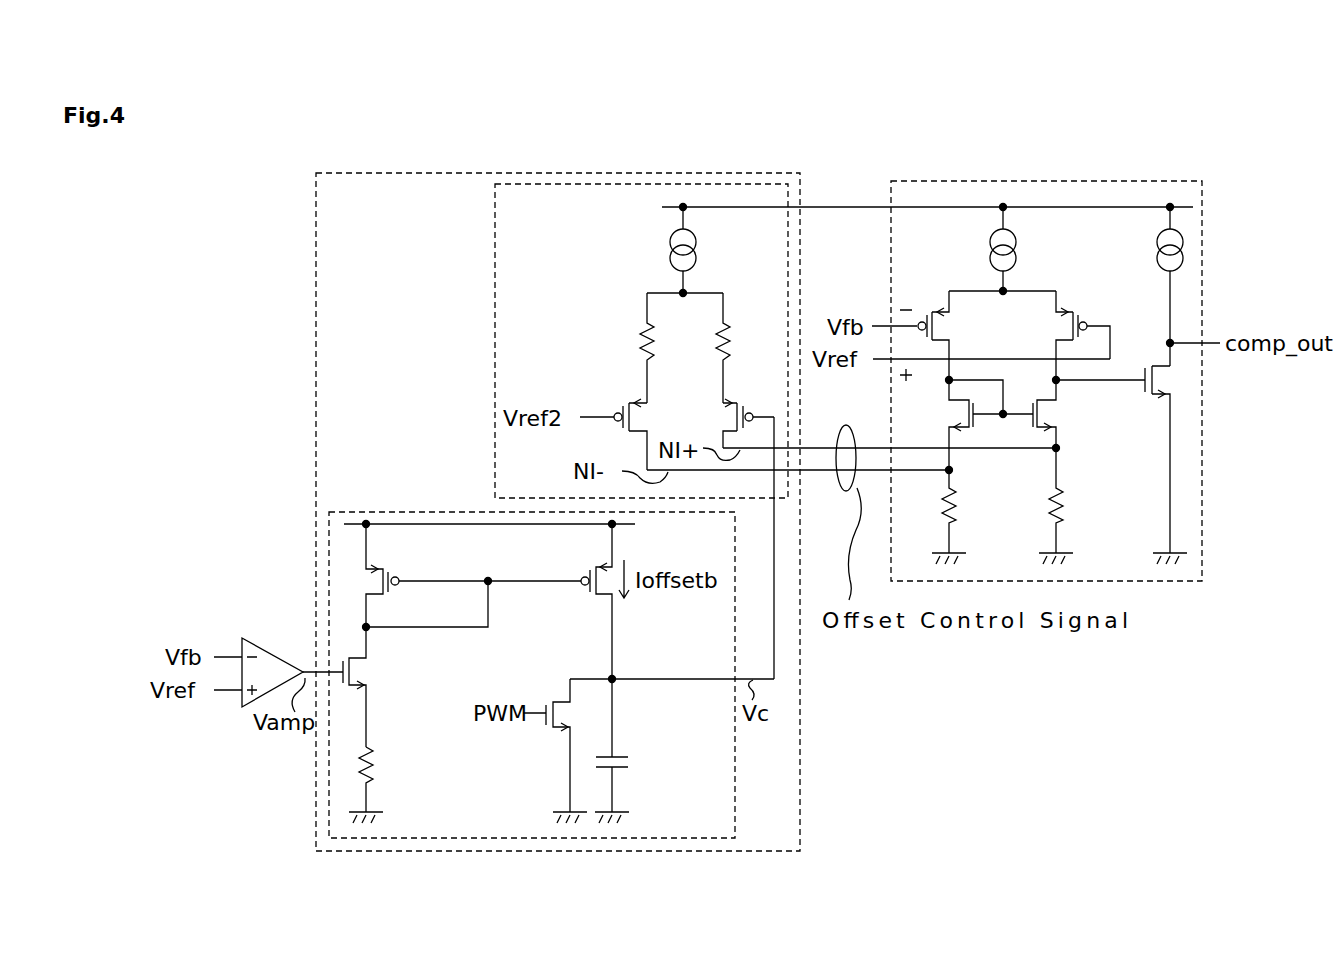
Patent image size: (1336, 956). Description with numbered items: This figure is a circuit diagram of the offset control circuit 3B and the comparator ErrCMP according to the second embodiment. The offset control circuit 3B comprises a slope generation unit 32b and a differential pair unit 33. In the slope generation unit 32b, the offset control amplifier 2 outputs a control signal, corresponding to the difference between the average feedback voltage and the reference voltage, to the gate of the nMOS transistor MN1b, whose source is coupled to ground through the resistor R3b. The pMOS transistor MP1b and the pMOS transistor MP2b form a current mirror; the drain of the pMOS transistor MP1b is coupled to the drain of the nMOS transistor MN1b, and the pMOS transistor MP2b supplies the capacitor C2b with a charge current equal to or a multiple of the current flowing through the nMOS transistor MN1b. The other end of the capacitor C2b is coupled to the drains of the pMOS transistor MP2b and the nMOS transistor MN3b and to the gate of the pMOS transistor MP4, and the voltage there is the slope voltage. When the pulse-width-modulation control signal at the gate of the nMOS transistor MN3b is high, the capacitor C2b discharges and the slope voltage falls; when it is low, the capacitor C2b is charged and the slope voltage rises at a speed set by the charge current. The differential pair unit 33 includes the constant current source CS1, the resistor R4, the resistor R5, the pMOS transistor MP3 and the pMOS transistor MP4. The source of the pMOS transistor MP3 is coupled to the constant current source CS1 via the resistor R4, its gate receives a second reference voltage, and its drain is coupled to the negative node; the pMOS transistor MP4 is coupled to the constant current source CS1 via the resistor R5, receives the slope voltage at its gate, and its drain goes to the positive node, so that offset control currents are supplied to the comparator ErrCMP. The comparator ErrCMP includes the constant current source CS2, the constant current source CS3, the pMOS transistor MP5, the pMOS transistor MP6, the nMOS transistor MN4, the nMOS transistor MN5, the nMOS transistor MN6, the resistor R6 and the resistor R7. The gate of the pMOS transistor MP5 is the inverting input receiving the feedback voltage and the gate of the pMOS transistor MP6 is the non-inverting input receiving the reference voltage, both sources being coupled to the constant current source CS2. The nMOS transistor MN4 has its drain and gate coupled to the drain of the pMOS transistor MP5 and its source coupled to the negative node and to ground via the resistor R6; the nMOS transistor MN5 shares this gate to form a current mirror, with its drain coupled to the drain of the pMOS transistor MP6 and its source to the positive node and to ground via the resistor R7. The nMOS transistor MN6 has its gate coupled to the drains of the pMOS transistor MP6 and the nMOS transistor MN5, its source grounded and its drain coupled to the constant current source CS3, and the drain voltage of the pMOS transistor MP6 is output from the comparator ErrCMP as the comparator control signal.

The offset control amplifier 2 is at (282, 657).
The offset control circuit 3B is at (316, 232).
The differential pair unit 33 is at (495, 186).
The slope generation unit 32b is at (405, 514).
The comparator ErrCMP is at (1165, 582).
The constant current source CS1 is at (658, 252).
The constant current source CS2 is at (978, 251).
The constant current source CS3 is at (1145, 286).
The resistor R4 is at (628, 348).
The resistor R5 is at (741, 348).
The resistor R6 is at (935, 517).
The resistor R7 is at (1070, 506).
The resistor R3b is at (387, 785).
The capacitor C2b is at (637, 751).
The pMOS transistor MP3 is at (613, 422).
The pMOS transistor MP4 is at (749, 411).
The pMOS transistor MP5 is at (936, 335).
The pMOS transistor MP6 is at (1084, 330).
The nMOS transistor MN4 is at (936, 425).
The nMOS transistor MN5 is at (1072, 414).
The nMOS transistor MN6 is at (1121, 465).
The pMOS transistor MP1b is at (473, 575).
The pMOS transistor MP2b is at (577, 601).
The nMOS transistor MN1b is at (370, 687).
The nMOS transistor MN3b is at (546, 745).